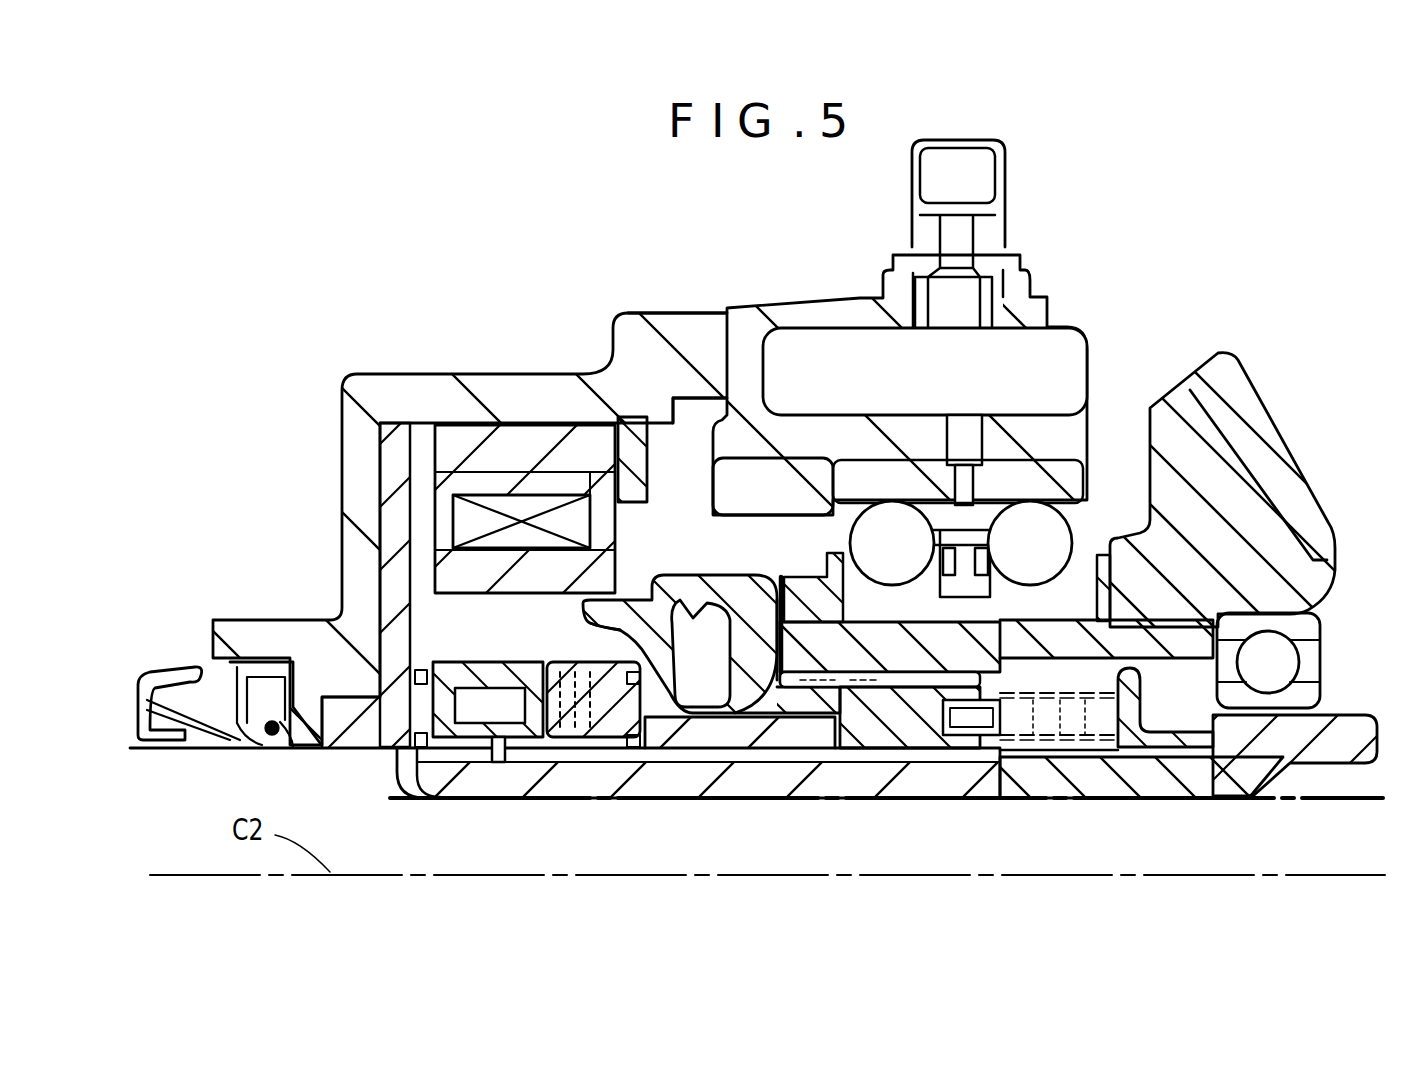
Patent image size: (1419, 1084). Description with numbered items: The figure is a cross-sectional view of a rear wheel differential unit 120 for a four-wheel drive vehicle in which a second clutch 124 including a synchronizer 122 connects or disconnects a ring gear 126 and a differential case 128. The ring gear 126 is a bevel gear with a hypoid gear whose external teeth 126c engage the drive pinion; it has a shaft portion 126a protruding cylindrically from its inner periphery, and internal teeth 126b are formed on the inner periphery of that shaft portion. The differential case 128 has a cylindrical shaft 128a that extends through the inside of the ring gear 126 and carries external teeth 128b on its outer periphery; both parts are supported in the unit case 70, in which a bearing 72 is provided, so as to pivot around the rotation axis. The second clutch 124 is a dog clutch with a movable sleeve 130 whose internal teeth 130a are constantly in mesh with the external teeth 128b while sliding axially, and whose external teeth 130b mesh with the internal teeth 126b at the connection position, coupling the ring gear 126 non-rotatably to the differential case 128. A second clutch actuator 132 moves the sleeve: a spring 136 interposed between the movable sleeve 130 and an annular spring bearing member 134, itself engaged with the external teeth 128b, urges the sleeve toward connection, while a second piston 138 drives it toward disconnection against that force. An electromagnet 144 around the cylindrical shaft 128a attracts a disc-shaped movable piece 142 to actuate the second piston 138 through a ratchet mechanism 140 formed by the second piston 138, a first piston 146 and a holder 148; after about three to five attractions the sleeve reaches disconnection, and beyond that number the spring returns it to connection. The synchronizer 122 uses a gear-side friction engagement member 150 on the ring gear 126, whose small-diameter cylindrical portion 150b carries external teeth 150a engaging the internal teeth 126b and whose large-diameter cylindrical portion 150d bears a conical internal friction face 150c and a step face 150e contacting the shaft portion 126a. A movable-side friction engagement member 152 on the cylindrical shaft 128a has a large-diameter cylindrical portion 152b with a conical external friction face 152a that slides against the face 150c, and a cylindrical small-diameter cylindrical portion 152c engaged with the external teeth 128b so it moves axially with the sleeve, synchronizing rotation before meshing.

The rear wheel differential unit 120 is at (1112, 236).
The unit case 70 is at (688, 335).
The bearing 72 is at (908, 528).
The second clutch actuator 132 is at (490, 371).
The large-diameter cylindrical portion 152b is at (593, 490).
The conical external friction face 152a is at (605, 590).
The electromagnet 144 is at (460, 523).
The movable piece 142 is at (395, 590).
The gear-side friction engagement member 150 is at (700, 562).
The external teeth 150a is at (797, 580).
The small-diameter cylindrical portion 150b is at (787, 752).
The conical internal friction face 150c is at (660, 588).
The large-diameter cylindrical portion 150d is at (742, 455).
The step face 150e is at (792, 650).
The ring gear 126 is at (1246, 356).
The shaft portion 126a is at (1003, 642).
The internal teeth 126b is at (829, 560).
The external teeth 126c is at (1258, 447).
The movable sleeve 130 is at (910, 776).
The internal teeth 130a is at (870, 736).
The external teeth 130b is at (892, 602).
The differential case 128 is at (1362, 708).
The cylindrical shaft 128a is at (1237, 762).
The external teeth 128b is at (1026, 752).
The second clutch 124 is at (1050, 770).
The spring bearing member 134 is at (1183, 736).
The spring 136 is at (1108, 772).
The synchronizer 122 is at (787, 730).
The movable-side friction engagement member 152 is at (655, 767).
The cylindrical small-diameter cylindrical portion 152c is at (727, 785).
The ratchet mechanism 140 is at (494, 768).
The first piston 146 is at (492, 672).
The second piston 138 is at (596, 672).
The holder 148 is at (512, 737).